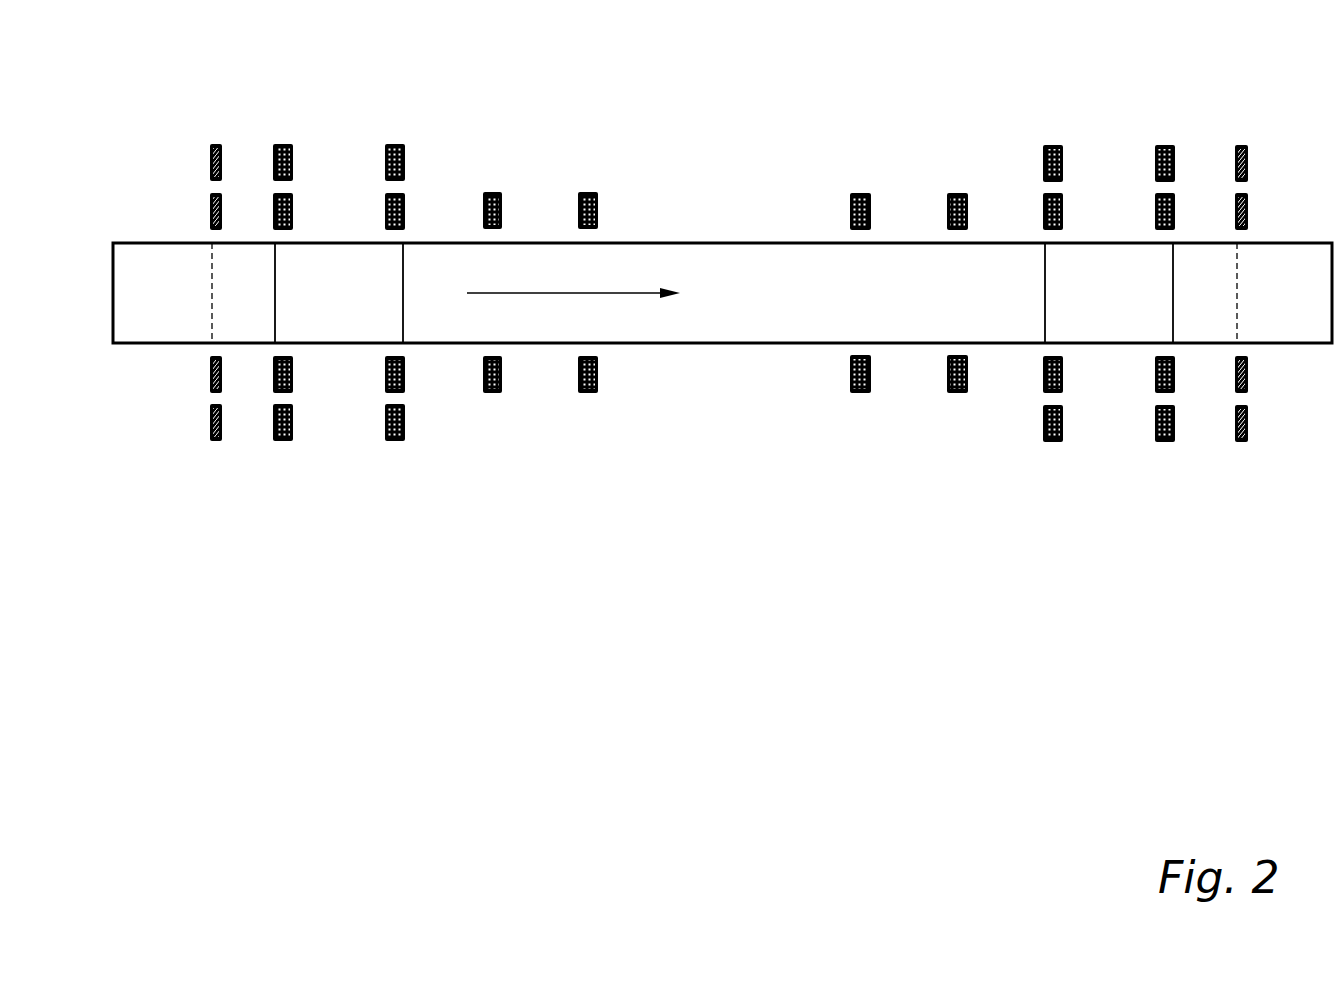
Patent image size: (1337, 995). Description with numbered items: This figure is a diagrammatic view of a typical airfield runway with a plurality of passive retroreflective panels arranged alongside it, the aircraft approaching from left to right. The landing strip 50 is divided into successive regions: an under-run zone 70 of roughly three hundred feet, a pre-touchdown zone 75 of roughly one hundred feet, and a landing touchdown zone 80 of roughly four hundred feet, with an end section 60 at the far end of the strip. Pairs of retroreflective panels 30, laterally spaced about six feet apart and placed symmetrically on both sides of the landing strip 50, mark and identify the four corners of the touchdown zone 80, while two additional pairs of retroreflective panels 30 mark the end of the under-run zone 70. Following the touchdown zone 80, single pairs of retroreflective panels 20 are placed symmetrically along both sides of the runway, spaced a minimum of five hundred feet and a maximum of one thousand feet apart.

The retroreflective panels 20 is at (585, 180).
The retroreflective panels 30 is at (218, 140).
The landing strip 50 is at (820, 293).
The end section 60 is at (1270, 293).
The under-run zone 70 is at (181, 293).
The pre-touchdown zone 75 is at (252, 293).
The landing touchdown zone 80 is at (359, 293).